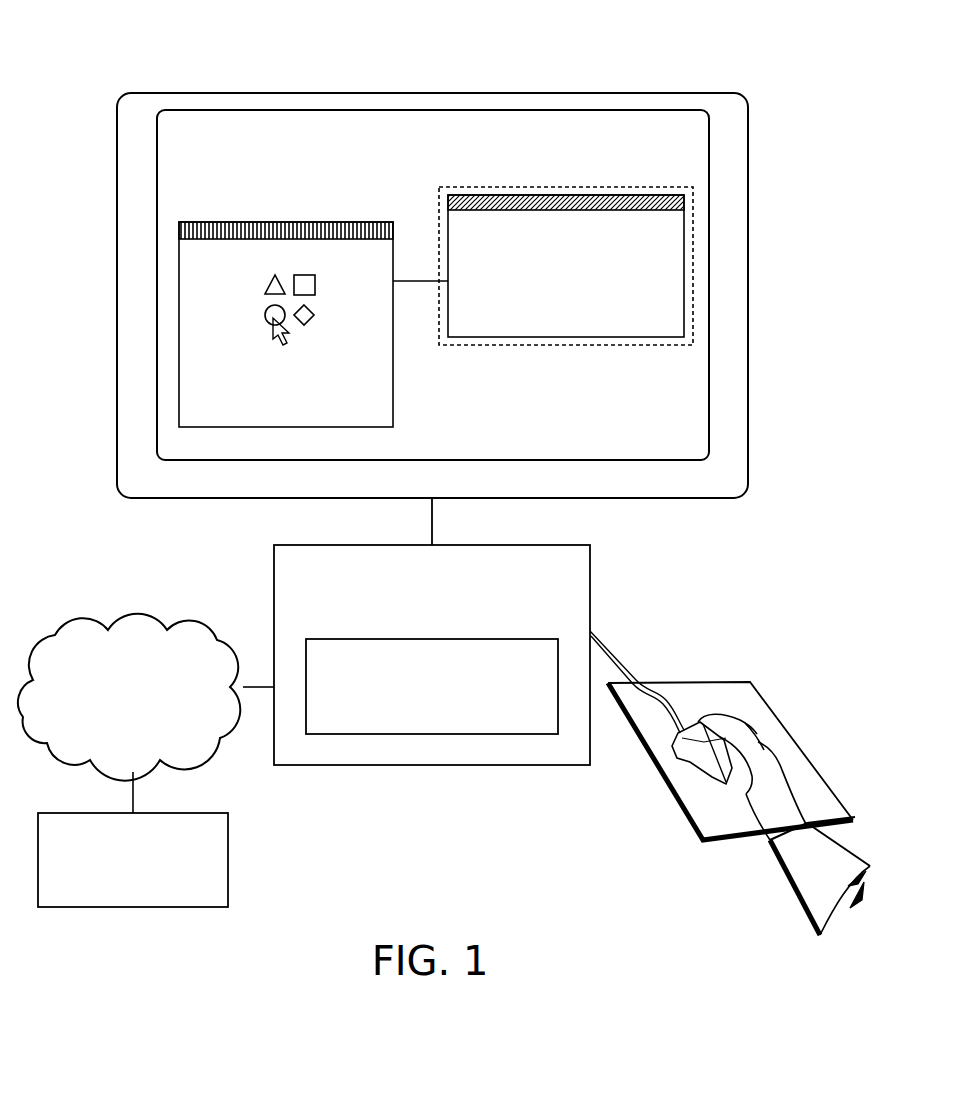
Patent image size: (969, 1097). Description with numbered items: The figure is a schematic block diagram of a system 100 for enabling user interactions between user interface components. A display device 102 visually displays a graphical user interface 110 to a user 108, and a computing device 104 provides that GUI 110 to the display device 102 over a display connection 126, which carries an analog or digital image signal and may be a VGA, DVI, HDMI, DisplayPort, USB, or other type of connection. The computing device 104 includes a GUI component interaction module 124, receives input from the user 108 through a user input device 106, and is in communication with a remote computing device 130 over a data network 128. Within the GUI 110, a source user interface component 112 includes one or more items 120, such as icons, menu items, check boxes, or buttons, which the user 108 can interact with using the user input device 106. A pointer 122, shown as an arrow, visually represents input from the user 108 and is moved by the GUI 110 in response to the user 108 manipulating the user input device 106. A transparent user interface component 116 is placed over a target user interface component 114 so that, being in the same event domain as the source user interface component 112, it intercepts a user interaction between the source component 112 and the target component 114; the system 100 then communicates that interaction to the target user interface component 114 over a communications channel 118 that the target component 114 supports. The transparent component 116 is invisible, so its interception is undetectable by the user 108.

The system 100 is at (100, 44).
The display device 102 is at (128, 94).
The computing device 104 is at (416, 621).
The user input device 106 is at (683, 729).
The user 108 is at (768, 838).
The graphical user interface 110 is at (163, 143).
The source user interface component 112 is at (198, 222).
The target user interface component 114 is at (472, 201).
The transparent user interface component 116 is at (562, 187).
The communications channel 118 is at (428, 281).
The items 120 is at (267, 310).
The pointer 122 is at (282, 337).
The GUI component interaction module 124 is at (416, 721).
The display connection 126 is at (432, 530).
The data network 128 is at (117, 713).
The remote computing device 130 is at (117, 894).